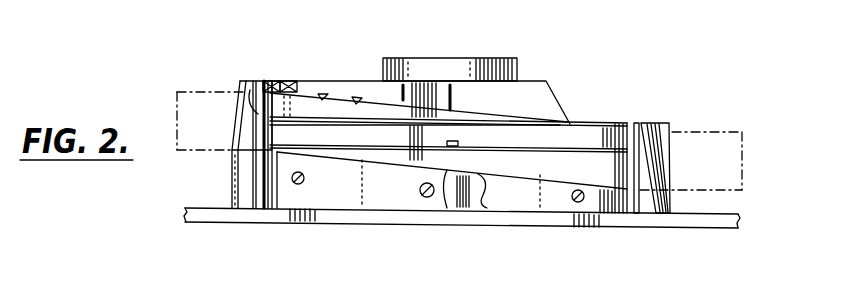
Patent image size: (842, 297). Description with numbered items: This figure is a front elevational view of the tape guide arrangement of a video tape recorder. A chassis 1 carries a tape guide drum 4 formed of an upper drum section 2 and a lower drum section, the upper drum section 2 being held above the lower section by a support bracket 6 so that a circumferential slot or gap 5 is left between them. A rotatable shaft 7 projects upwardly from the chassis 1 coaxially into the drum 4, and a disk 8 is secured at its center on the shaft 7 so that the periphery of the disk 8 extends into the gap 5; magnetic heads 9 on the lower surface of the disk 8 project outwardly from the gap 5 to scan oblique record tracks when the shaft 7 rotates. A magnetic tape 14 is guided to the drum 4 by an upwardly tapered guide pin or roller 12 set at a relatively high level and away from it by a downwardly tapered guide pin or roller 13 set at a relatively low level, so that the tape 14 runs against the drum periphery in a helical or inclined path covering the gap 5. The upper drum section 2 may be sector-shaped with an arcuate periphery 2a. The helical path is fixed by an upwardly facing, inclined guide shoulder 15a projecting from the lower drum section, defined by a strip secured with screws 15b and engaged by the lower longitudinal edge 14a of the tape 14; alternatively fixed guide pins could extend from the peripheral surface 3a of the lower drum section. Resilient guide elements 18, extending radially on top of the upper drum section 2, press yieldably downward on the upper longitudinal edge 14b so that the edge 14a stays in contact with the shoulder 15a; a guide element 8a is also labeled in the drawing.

The chassis 1 is at (684, 223).
The upper drum section 2 is at (547, 97).
The arcuate periphery 2a is at (255, 81).
The peripheral surface 3a is at (550, 172).
The tape guide drum 4 is at (586, 81).
The circumferential slot or gap 5 is at (628, 138).
The support bracket 6 is at (403, 58).
The rotatable shaft 7 is at (453, 190).
The disk 8 is at (603, 125).
The guide 8a is at (317, 208).
The magnetic heads 9 is at (457, 142).
The guide pin or roller 12 is at (243, 182).
The guide pin or roller 13 is at (657, 123).
The magnetic tape 14 is at (213, 92).
The lower longitudinal edge 14a is at (362, 172).
The upper longitudinal edge 14b is at (346, 90).
The inclined guide shoulder 15a is at (487, 190).
The screws 15b is at (424, 196).
The resilient guide elements 18 is at (316, 81).